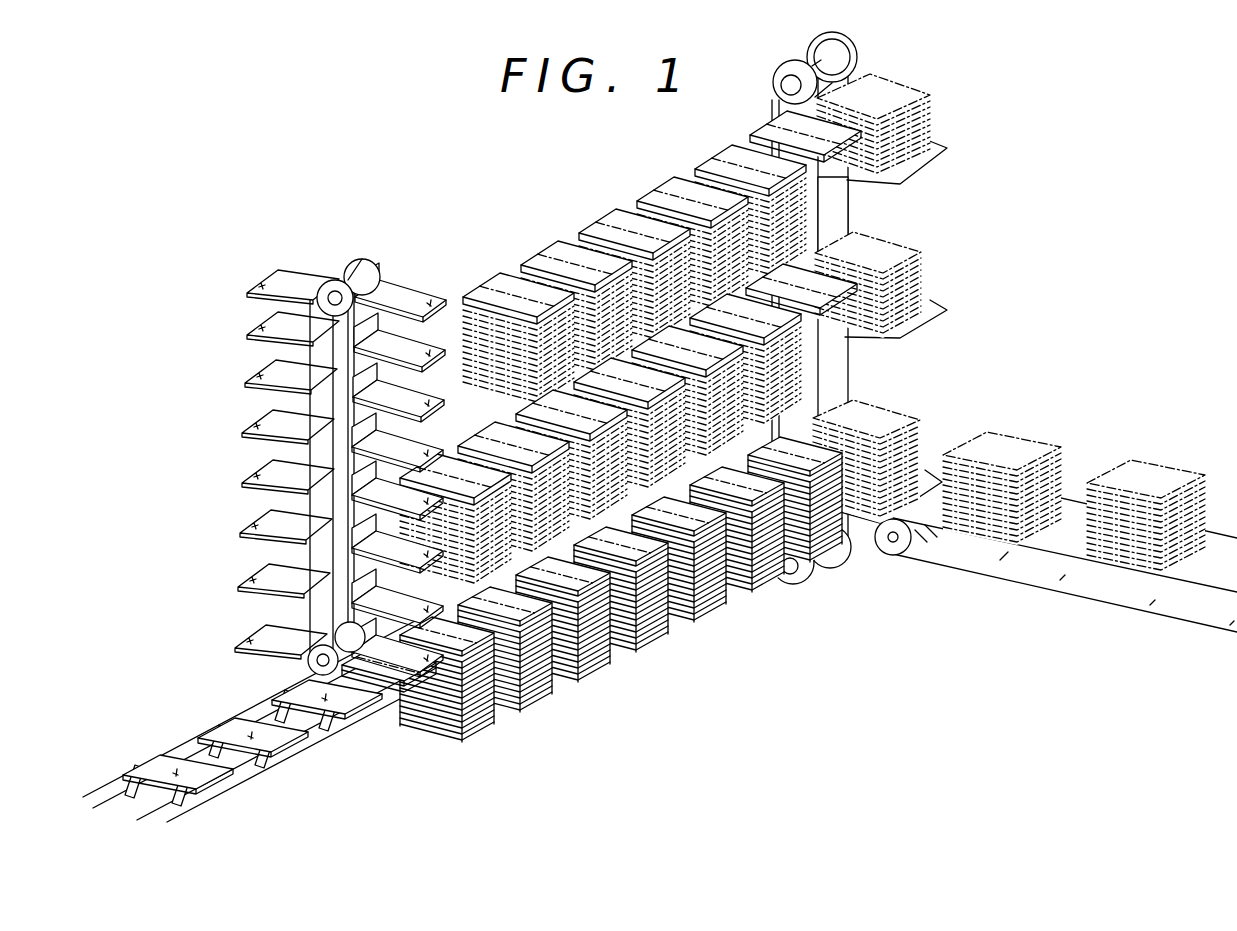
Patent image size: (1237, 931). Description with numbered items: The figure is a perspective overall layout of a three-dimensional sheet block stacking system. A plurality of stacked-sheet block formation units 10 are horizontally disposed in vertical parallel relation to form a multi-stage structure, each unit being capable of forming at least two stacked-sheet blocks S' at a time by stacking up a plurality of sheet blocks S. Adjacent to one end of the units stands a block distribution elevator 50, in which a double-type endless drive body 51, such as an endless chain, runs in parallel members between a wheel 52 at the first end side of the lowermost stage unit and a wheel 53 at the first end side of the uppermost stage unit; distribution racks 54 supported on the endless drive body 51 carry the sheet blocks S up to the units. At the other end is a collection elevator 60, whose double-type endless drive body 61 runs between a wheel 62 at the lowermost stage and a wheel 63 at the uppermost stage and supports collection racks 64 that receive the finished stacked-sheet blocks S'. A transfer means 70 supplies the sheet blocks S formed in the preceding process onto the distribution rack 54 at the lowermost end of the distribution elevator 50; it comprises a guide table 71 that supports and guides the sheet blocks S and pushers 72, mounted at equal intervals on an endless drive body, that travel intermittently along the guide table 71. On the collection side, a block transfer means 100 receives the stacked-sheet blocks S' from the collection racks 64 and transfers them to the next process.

The stacked-sheet block formation unit 10 is at (925, 120).
The block distribution elevator 50 is at (315, 451).
The endless drive body 51 is at (312, 372).
The wheel 52 is at (305, 665).
The wheel 53 is at (362, 270).
The distribution rack 54 is at (420, 295).
The collection elevator 60 is at (874, 333).
The endless drive body 61 is at (852, 208).
The wheel 62 is at (800, 577).
The wheel 63 is at (858, 54).
The collection rack 64 is at (940, 165).
The transfer means 70 is at (256, 723).
The guide table 71 is at (332, 730).
The pusher 72 is at (253, 755).
The block transfer means 100 is at (1045, 636).
The sheet block S is at (444, 600).
The stacked-sheet block S' is at (753, 532).